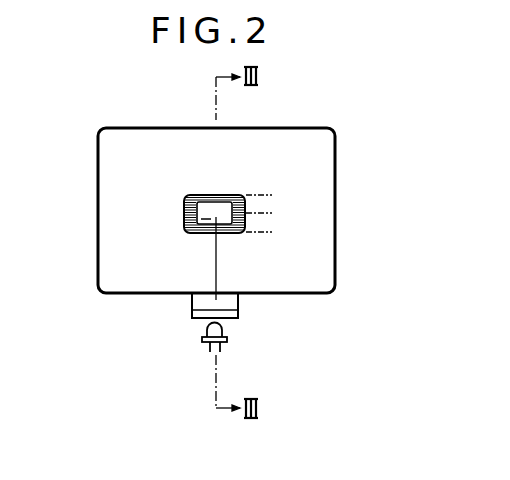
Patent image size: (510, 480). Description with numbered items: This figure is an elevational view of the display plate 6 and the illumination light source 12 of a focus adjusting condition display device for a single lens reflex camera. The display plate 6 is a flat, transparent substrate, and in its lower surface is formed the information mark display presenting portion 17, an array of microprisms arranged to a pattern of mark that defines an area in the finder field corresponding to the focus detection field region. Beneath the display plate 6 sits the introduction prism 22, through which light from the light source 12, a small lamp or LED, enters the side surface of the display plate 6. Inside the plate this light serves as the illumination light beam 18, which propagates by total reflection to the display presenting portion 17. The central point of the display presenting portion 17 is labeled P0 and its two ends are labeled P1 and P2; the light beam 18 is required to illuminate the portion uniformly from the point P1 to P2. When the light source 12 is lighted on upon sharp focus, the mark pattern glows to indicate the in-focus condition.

The display plate 6 is at (310, 128).
The information mark display presenting portion 17 is at (185, 195).
The light beam for illumination 18 is at (216, 250).
The introduction prism 22 is at (236, 300).
The light source 12 is at (222, 331).
The central point P0 is at (273, 213).
The end point P1 is at (273, 232).
The end point P2 is at (273, 195).